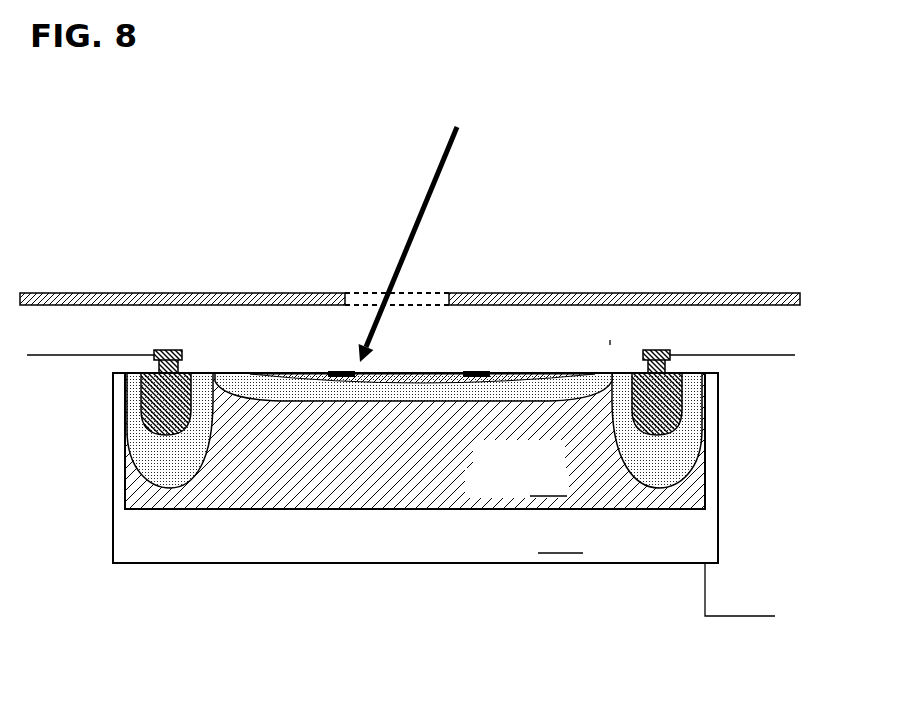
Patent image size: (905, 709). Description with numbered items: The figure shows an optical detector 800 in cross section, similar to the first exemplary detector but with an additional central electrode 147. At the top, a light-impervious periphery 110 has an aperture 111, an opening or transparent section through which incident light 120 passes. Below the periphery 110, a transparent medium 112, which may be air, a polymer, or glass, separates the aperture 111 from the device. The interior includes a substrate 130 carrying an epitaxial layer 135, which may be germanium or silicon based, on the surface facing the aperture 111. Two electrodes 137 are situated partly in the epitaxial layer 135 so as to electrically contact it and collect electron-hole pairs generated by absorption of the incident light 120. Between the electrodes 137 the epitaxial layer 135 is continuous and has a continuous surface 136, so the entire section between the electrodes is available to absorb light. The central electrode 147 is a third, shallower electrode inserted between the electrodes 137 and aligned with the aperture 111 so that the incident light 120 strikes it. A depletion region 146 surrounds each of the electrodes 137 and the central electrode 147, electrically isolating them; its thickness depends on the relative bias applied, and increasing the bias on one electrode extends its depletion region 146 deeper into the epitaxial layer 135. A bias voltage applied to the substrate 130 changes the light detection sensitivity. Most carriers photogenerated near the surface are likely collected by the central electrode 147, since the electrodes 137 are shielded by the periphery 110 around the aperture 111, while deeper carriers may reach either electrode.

The optical detector 800 is at (95, 83).
The substrate 130 is at (583, 553).
The epitaxial layer 135 is at (567, 496).
The depletion region 146 is at (650, 477).
The central electrode 147 is at (397, 382).
The continuous surface 136 is at (275, 422).
The electrodes 137 is at (128, 413).
The periphery 110 is at (58, 293).
The aperture 111 is at (412, 298).
The transparent medium 112 is at (610, 340).
The incident light 120 is at (442, 215).